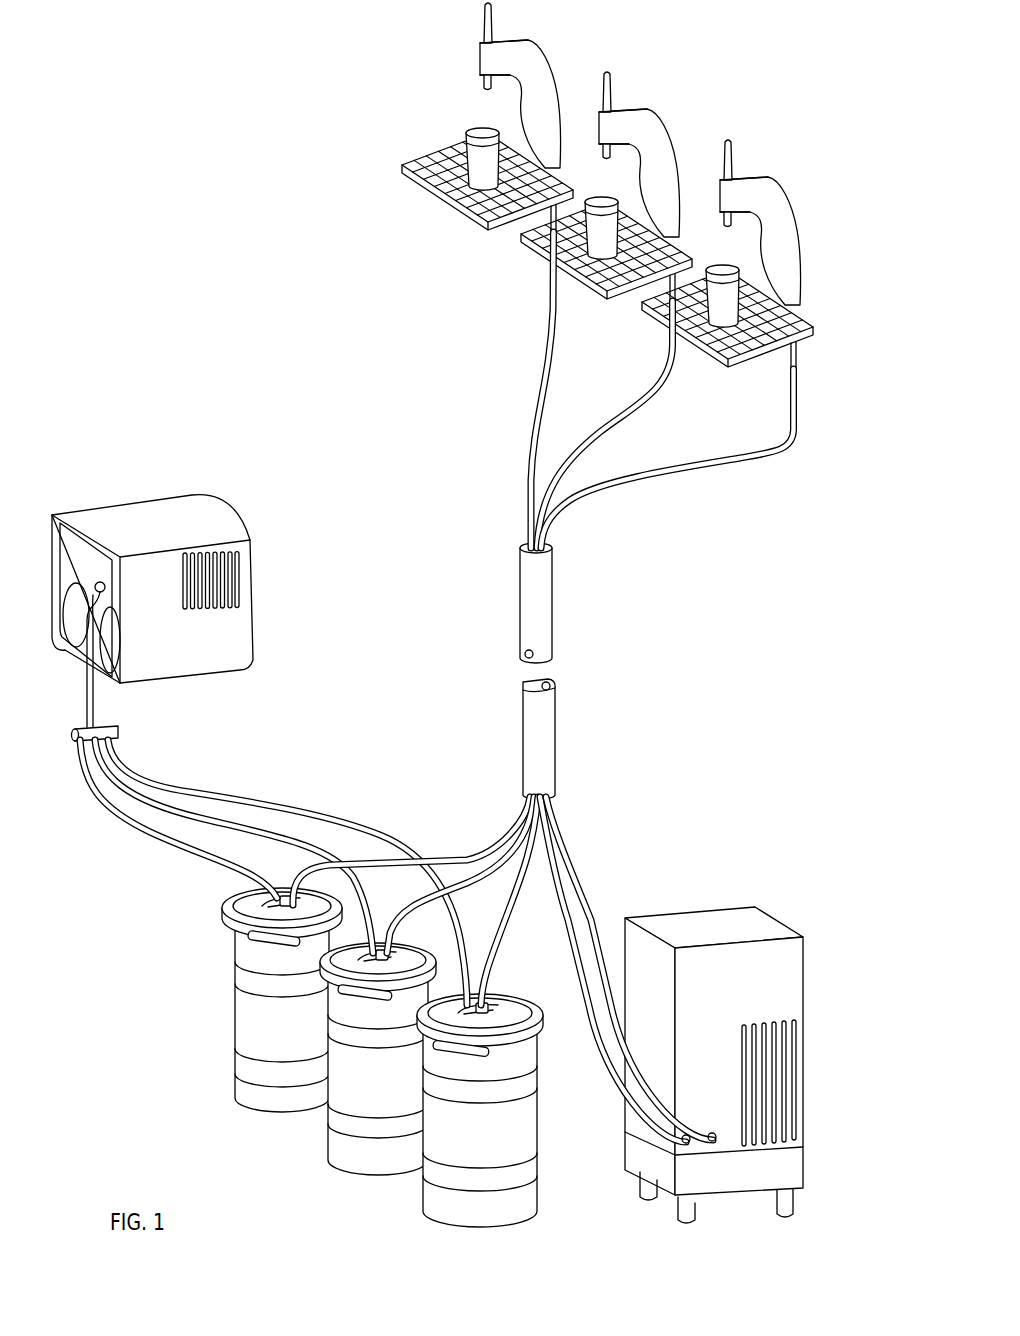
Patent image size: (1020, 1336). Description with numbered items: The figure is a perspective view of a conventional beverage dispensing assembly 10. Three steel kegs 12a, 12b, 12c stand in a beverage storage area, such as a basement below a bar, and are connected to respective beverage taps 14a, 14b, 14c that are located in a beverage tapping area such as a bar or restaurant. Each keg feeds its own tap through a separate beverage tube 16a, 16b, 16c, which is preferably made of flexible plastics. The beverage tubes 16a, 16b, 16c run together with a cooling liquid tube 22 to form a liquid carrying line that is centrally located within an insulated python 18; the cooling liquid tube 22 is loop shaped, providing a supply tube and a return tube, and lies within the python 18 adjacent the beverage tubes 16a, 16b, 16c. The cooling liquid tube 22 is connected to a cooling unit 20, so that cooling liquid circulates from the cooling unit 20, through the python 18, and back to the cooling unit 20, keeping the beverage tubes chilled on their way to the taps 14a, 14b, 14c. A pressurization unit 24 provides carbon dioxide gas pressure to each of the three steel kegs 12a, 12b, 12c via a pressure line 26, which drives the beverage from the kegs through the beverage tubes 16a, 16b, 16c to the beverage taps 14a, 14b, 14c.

The beverage dispensing assembly 10 is at (96, 168).
The steel keg 12a is at (258, 1102).
The steel keg 12b is at (353, 1155).
The steel keg 12c is at (452, 1208).
The beverage tap 14a is at (520, 57).
The beverage tap 14b is at (640, 126).
The beverage tap 14c is at (765, 196).
The beverage tube 16a is at (547, 368).
The beverage tube 16b is at (593, 440).
The beverage tube 16c is at (620, 483).
The python 18 is at (545, 603).
The cooling unit 20 is at (710, 925).
The cooling liquid tube 22 is at (577, 920).
The pressurization unit 24 is at (200, 518).
The pressure line 26 is at (93, 700).